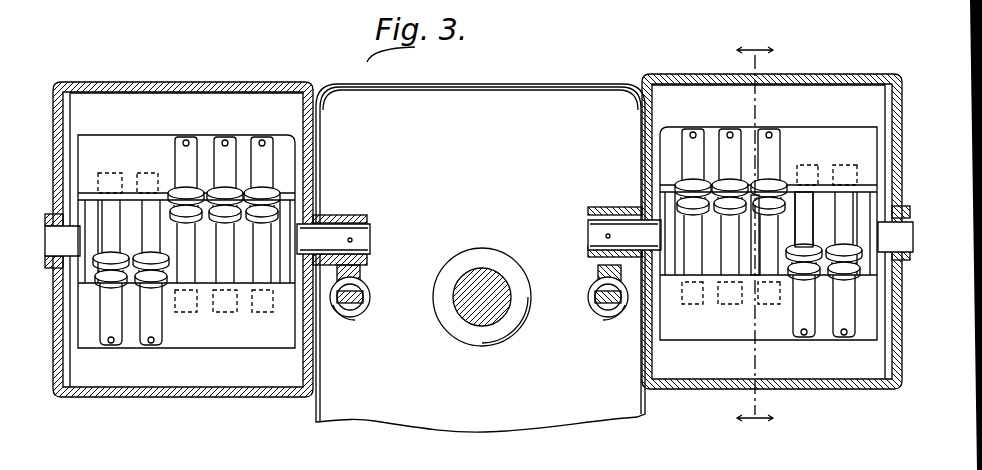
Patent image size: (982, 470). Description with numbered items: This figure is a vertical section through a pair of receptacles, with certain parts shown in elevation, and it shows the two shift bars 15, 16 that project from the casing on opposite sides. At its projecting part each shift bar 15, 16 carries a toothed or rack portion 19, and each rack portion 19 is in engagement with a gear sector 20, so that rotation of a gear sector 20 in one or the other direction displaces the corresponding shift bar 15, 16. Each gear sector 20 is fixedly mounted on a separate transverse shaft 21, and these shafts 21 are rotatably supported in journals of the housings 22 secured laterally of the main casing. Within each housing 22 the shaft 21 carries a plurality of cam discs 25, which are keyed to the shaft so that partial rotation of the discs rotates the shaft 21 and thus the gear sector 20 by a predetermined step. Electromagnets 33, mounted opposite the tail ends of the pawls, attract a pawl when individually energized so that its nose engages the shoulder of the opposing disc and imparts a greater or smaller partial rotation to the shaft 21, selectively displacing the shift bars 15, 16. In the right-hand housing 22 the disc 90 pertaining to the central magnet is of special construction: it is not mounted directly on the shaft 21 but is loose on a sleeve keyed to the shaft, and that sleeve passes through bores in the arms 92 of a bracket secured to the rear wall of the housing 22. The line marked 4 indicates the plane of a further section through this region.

The section line 4- 4 is at (755, 239).
The shift bar 15 is at (350, 318).
The shift bar 16 is at (601, 318).
The toothed or rack portion 19 is at (365, 293).
The gear sector 20 is at (358, 275).
The transverse shaft 21 is at (368, 227).
The housing 22 is at (182, 400).
The cam disc 25 is at (147, 205).
The electromagnet 33 is at (255, 187).
The disc 90 is at (755, 308).
The arms 92 is at (817, 207).